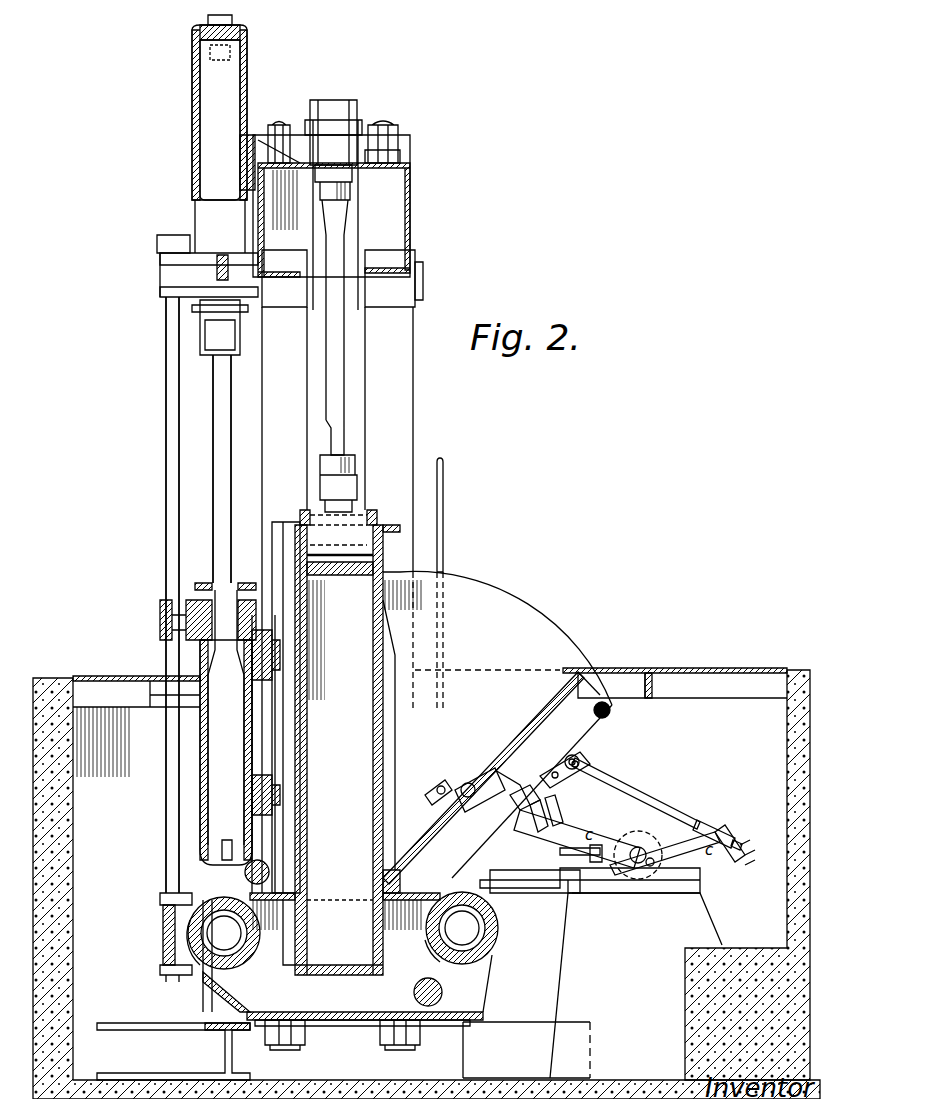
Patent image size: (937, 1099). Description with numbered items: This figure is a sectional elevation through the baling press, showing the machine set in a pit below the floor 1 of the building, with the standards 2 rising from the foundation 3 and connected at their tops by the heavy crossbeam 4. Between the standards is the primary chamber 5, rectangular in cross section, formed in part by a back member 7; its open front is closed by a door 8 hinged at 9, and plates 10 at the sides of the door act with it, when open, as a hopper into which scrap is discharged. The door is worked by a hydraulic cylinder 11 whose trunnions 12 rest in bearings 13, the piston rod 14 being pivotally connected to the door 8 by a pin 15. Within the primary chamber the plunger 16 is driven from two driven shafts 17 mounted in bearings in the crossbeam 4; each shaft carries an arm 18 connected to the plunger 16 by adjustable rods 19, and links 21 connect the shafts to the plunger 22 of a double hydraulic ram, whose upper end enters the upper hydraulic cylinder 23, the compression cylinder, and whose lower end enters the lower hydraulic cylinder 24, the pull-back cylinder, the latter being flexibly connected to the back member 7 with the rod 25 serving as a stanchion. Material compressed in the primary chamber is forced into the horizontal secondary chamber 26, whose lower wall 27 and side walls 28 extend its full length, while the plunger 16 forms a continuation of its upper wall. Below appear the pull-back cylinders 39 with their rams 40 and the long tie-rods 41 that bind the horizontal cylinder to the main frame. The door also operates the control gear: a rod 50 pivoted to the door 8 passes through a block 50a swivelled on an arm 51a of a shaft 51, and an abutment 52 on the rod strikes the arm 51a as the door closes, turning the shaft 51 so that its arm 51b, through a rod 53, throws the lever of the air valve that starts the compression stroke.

The floor 1 is at (140, 678).
The standards 2 is at (295, 428).
The foundation 3 is at (512, 1050).
The crossbeam 4 is at (287, 215).
The primary chamber 5 is at (352, 716).
The back member 7 is at (296, 738).
The door 8 is at (520, 730).
The hinge 9 is at (378, 862).
The plates 10 is at (497, 724).
The cylinder 11 is at (590, 830).
The trunnions 12 is at (645, 850).
The bearings 13 is at (625, 885).
The piston rod 14 is at (534, 826).
The pin 15 is at (452, 808).
The plunger 16 is at (348, 585).
The driven shafts 17 is at (418, 275).
The arm 18 is at (360, 130).
The rods 19 is at (340, 360).
The links 21 is at (215, 318).
The plunger 22 is at (212, 460).
The upper hydraulic cylinder 23 is at (195, 128).
The lower hydraulic cylinder 24 is at (208, 724).
The rod 25 is at (166, 502).
The secondary chamber 26 is at (356, 934).
The lower wall 27 is at (322, 990).
The side walls 28 is at (292, 960).
The pull-back cylinders 39 is at (232, 970).
The rams 40 is at (342, 930).
The tie-rods 41 is at (244, 876).
The rod 50 is at (618, 790).
The block 50a is at (578, 758).
The shaft 51 is at (510, 815).
The arm 51a is at (570, 770).
The arm 51b is at (446, 814).
The abutment 52 is at (712, 825).
The rod 53 is at (440, 568).